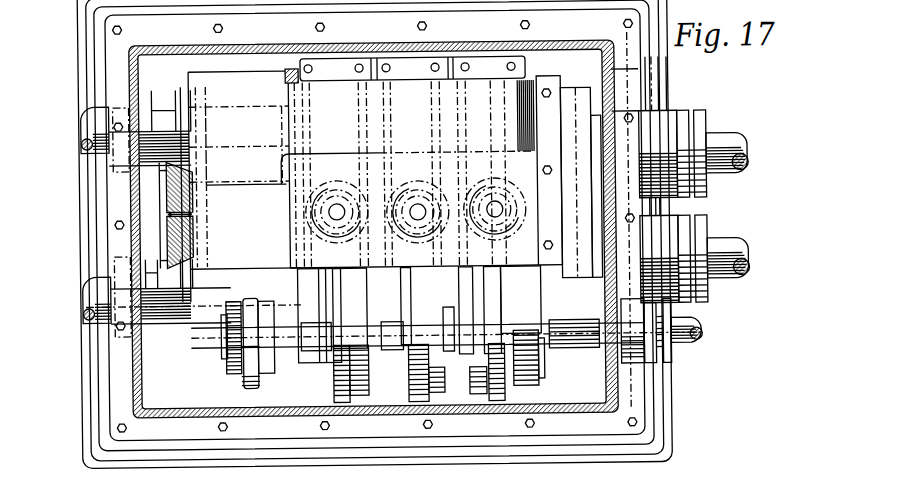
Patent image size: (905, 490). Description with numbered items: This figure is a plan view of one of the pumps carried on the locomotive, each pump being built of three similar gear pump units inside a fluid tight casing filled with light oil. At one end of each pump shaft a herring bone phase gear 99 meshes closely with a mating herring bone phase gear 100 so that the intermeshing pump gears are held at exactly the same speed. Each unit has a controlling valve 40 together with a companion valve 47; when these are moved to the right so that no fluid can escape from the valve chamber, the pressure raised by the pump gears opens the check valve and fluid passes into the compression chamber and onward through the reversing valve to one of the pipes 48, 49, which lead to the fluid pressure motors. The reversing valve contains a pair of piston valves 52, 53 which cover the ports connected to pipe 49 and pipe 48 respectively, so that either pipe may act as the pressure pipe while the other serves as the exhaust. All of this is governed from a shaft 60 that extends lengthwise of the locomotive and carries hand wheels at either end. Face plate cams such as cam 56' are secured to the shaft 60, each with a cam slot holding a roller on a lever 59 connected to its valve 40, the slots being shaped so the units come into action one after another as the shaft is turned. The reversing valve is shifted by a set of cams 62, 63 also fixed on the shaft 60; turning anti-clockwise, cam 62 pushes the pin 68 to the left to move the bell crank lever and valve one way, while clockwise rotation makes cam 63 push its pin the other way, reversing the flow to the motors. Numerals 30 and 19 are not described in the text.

The pipe 48 is at (82, 124).
The pipe 49 is at (82, 305).
The herring bone phase gear 100 is at (170, 164).
The herring bone phase gear 99 is at (170, 230).
The piston valve 53 is at (280, 185).
The piston valve 52 is at (277, 289).
The valve 40 is at (406, 195).
The valve 47 is at (405, 307).
The pin 68 is at (226, 301).
The cam 62 is at (229, 368).
The cam 63 is at (263, 322).
The lever 59 is at (408, 392).
The face plate cam 56' is at (473, 389).
The shaft 60 is at (700, 336).
The base plate 30 is at (375, 245).
The frame plate 19 is at (375, 245).